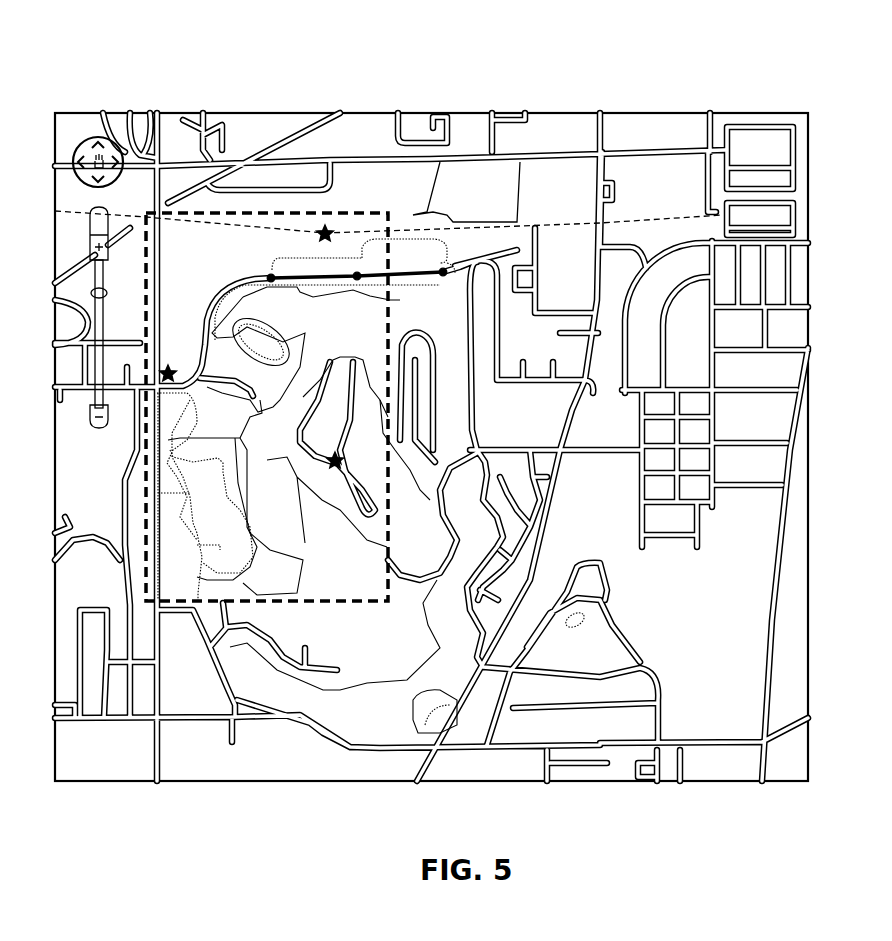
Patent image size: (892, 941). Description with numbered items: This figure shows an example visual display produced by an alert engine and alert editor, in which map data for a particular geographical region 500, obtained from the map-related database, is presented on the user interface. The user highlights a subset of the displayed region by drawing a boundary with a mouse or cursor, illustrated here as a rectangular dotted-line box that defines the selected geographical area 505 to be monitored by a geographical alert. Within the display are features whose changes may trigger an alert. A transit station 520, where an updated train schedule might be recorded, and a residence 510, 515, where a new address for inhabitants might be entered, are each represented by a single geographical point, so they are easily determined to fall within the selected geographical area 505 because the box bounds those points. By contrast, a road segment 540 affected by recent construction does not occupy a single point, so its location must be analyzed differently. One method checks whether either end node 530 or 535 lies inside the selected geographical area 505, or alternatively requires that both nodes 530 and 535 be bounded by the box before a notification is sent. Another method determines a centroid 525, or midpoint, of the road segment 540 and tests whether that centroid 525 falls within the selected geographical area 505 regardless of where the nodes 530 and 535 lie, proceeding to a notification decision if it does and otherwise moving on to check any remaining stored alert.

The geographical region 500 is at (124, 50).
The selected geographical area 505 is at (323, 603).
The residence 510 is at (172, 368).
The residence 515 is at (330, 465).
The transit station 520 is at (325, 228).
The centroid 525 is at (357, 282).
The node 530 is at (268, 274).
The node 535 is at (441, 278).
The road segment 540 is at (410, 239).